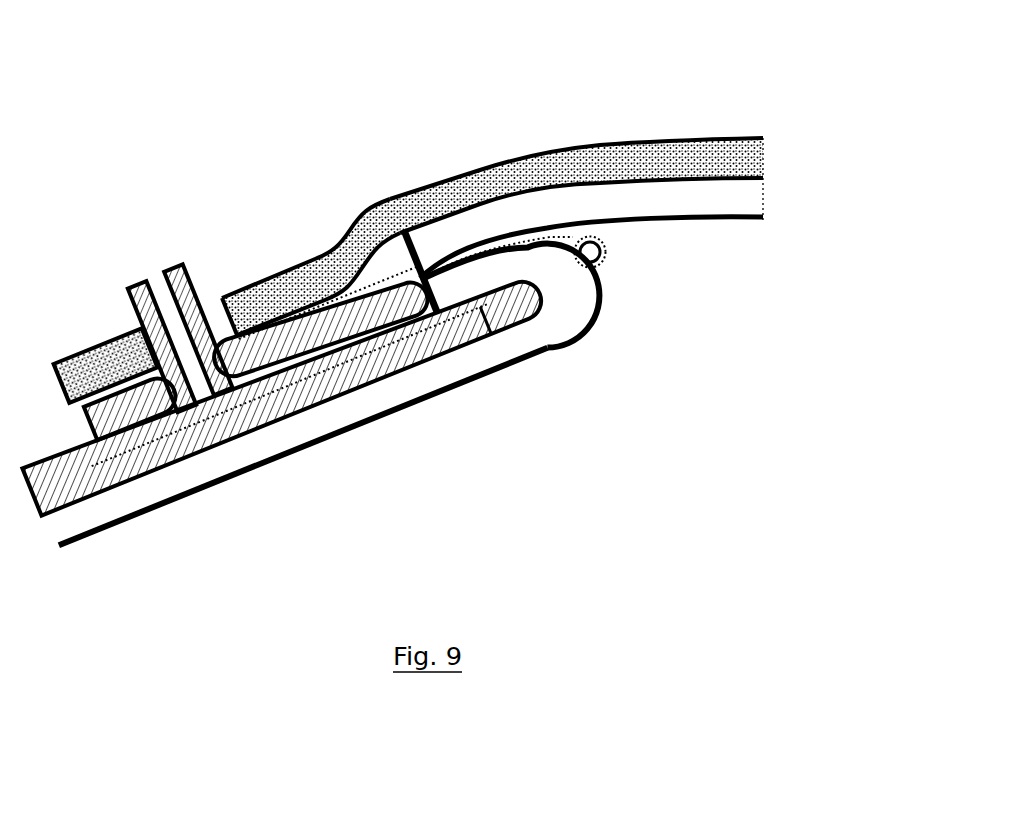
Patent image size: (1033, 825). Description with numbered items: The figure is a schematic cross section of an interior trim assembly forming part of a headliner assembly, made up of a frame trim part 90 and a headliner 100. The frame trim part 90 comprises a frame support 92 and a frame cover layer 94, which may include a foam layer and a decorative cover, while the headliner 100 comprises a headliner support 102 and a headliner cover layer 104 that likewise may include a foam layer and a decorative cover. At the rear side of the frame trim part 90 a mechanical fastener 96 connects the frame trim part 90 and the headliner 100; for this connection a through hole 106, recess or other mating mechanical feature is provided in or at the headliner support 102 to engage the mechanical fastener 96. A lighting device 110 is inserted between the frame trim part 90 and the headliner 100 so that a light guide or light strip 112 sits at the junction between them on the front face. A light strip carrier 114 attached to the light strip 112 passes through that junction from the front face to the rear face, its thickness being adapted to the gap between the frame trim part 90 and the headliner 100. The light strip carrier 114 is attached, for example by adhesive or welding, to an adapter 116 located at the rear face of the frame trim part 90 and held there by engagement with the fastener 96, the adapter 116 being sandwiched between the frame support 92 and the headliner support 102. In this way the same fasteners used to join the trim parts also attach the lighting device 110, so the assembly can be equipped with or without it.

The frame trim part 90 is at (582, 344).
The frame support 92 is at (513, 333).
The frame cover layer 94 is at (435, 384).
The mechanical fastener 96 is at (195, 278).
The headliner 100 is at (513, 110).
The headliner support 102 is at (702, 139).
The headliner cover layer 104 is at (717, 200).
The through hole 106 is at (220, 318).
The lighting device 110 is at (727, 248).
The light strip 112 is at (591, 253).
The light strip carrier 114 is at (423, 255).
The adapter 116 is at (288, 376).